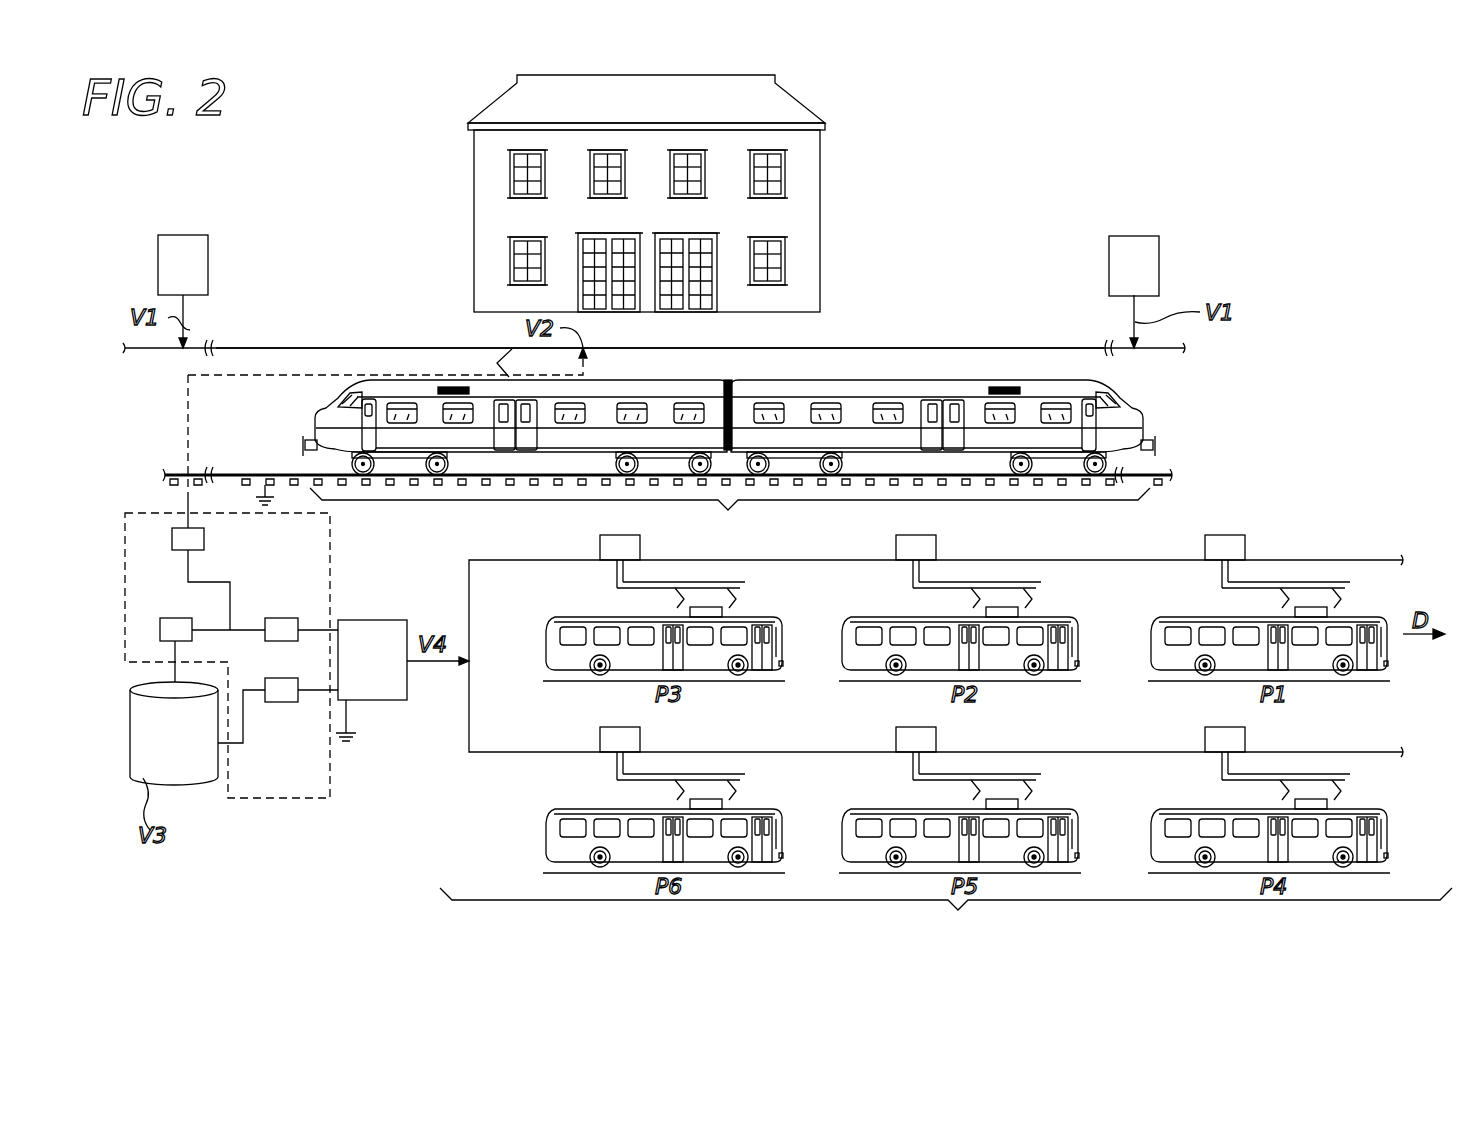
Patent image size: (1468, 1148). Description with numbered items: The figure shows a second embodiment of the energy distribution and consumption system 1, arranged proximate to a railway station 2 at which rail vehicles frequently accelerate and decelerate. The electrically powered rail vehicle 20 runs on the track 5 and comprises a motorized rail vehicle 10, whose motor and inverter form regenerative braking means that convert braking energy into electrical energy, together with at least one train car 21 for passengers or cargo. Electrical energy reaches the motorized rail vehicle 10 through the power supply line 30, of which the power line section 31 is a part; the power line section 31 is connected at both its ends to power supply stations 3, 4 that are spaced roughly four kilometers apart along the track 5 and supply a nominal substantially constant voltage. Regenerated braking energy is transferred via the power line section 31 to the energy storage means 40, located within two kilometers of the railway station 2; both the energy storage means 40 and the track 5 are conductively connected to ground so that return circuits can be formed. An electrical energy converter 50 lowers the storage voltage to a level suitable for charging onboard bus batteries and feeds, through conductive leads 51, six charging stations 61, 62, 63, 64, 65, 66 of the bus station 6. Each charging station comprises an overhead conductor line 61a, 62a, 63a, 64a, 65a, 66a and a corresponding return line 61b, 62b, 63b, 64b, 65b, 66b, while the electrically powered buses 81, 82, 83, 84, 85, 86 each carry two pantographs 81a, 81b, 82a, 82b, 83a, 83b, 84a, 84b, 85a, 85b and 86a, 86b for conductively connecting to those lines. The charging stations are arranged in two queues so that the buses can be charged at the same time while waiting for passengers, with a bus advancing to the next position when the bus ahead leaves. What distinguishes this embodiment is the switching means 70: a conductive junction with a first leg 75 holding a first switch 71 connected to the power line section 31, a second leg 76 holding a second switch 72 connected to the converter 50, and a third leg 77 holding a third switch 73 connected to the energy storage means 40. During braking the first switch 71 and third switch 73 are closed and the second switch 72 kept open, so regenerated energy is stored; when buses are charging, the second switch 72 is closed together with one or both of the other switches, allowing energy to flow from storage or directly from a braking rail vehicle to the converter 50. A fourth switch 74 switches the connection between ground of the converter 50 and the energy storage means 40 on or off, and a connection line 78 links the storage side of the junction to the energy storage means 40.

The energy distribution and consumption system 1 is at (314, 176).
The railway station 2 is at (780, 103).
The power supply station 3 is at (180, 250).
The power supply station 4 is at (1140, 246).
The track 5 is at (218, 472).
The bus station 6 is at (946, 912).
The motorized rail vehicle 10 is at (706, 392).
The rail vehicle 20 is at (730, 512).
The train car 21 is at (965, 388).
The power supply line 30 is at (160, 352).
The power line section 31 is at (900, 345).
The energy storage means 40 is at (189, 767).
The electrical energy converter 50 is at (385, 688).
The conductive lead 51 is at (442, 665).
The charging station 61 is at (1225, 547).
The overhead conductor line 61a is at (1348, 581).
The return line 61b is at (1221, 582).
The charging station 62 is at (916, 547).
The overhead conductor line 62a is at (1039, 581).
The return line 62b is at (912, 582).
The charging station 63 is at (620, 547).
The overhead conductor line 63a is at (743, 581).
The return line 63b is at (616, 582).
The charging station 64 is at (1225, 739).
The overhead conductor line 64a is at (1348, 773).
The return line 64b is at (1221, 774).
The charging station 65 is at (916, 739).
The overhead conductor line 65a is at (1039, 773).
The return line 65b is at (912, 774).
The charging station 66 is at (620, 739).
The overhead conductor line 66a is at (743, 773).
The return line 66b is at (616, 774).
The switching means 70 is at (330, 790).
The first switch 71 is at (193, 541).
The second switch 72 is at (280, 621).
The third switch 73 is at (162, 630).
The fourth switch 74 is at (285, 698).
The first leg 75 is at (230, 590).
The second leg 76 is at (251, 634).
The third leg 77 is at (203, 628).
The storage connection line 78 is at (244, 741).
The electrically powered bus 81 is at (1313, 660).
The pantograph 81a is at (1281, 597).
The pantograph 81b is at (1342, 599).
The electrically powered bus 82 is at (1004, 660).
The pantograph 82a is at (972, 597).
The pantograph 82b is at (1033, 599).
The electrically powered bus 83 is at (708, 660).
The pantograph 83a is at (676, 597).
The pantograph 83b is at (737, 599).
The electrically powered bus 84 is at (1385, 842).
The pantograph 84a is at (1281, 789).
The pantograph 84b is at (1342, 791).
The electrically powered bus 85 is at (1083, 848).
The pantograph 85a is at (972, 789).
The pantograph 85b is at (1033, 791).
The electrically powered bus 86 is at (549, 840).
The pantograph 86a is at (676, 789).
The pantograph 86b is at (737, 791).